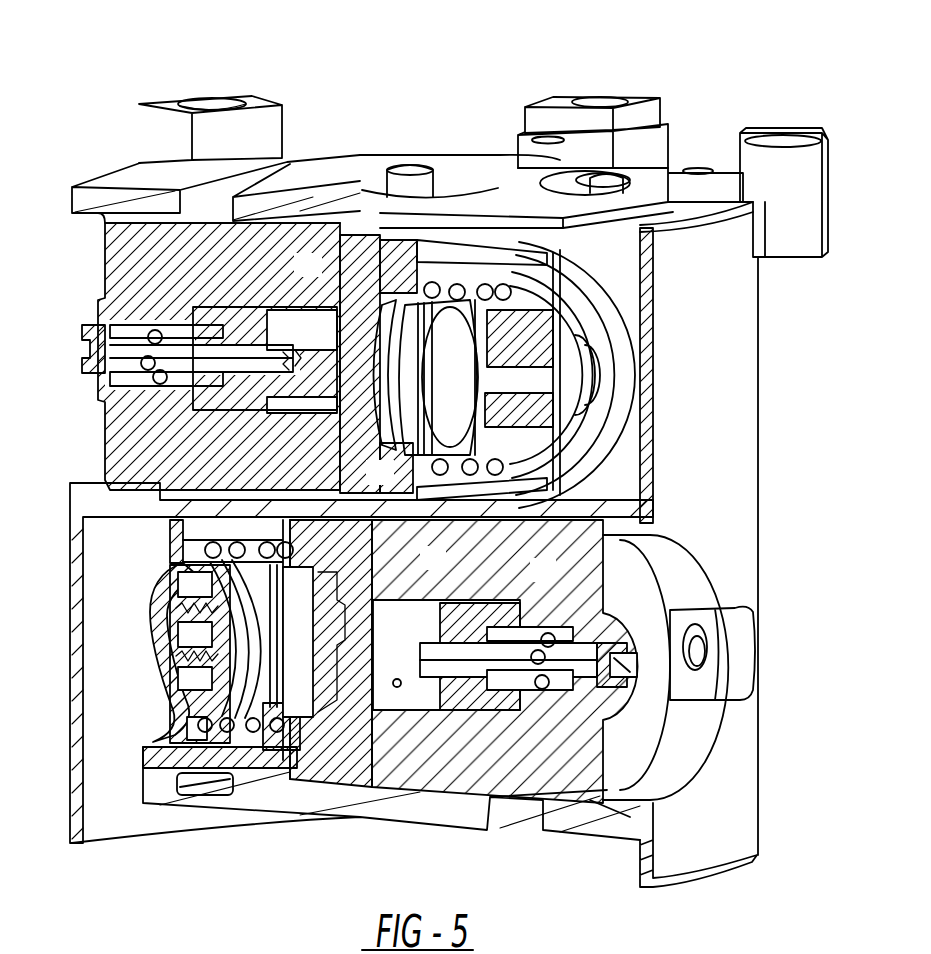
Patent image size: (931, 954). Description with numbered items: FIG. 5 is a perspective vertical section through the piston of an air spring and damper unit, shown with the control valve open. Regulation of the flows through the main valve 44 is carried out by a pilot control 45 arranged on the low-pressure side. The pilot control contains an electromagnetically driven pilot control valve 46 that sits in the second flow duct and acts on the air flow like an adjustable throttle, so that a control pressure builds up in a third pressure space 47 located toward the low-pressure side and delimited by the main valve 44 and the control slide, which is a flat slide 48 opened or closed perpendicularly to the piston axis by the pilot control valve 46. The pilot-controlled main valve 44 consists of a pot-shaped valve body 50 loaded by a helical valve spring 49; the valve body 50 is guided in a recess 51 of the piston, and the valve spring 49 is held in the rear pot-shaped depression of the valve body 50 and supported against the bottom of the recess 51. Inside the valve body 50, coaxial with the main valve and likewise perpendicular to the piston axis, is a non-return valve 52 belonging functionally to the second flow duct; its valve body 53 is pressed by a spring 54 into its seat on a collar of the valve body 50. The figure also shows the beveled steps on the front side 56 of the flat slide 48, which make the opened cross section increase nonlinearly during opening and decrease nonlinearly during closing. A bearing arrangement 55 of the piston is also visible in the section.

The main valve 44 is at (540, 264).
The pilot control 45 is at (231, 452).
The pilot control valve 46 is at (228, 312).
The third pressure space 47 is at (440, 478).
The flat slide 48 is at (340, 363).
The valve spring 49 is at (548, 440).
The valve body 50 is at (556, 405).
The recess 51 is at (438, 262).
The non-return valve 52 is at (463, 350).
The valve body 53 is at (560, 385).
The spring 54 is at (562, 365).
The bearing 55 is at (548, 345).
The front side 56 is at (340, 307).